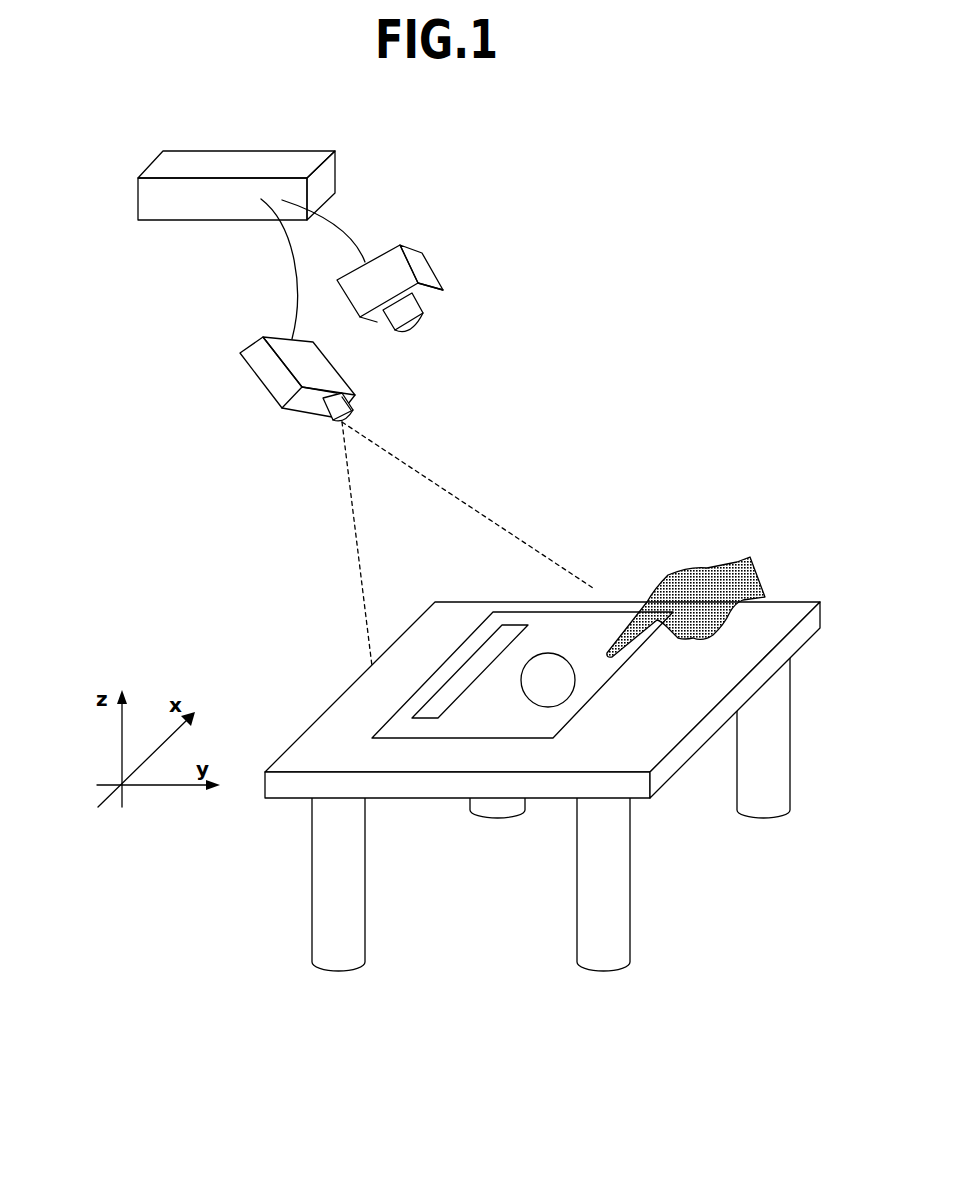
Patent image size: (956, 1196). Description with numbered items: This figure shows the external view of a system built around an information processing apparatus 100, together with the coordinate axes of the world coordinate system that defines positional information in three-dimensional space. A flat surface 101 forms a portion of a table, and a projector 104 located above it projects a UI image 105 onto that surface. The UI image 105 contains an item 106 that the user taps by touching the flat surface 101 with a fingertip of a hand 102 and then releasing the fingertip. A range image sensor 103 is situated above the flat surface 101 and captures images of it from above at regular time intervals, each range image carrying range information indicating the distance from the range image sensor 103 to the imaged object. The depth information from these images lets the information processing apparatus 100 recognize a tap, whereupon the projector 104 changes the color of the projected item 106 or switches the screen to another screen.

The information processing apparatus 100 is at (137, 200).
The flat surface 101 is at (318, 715).
The hand 102 is at (699, 568).
The range image sensor 103 is at (433, 302).
The projector 104 is at (254, 346).
The UI image 105 is at (470, 718).
The item 106 is at (558, 685).